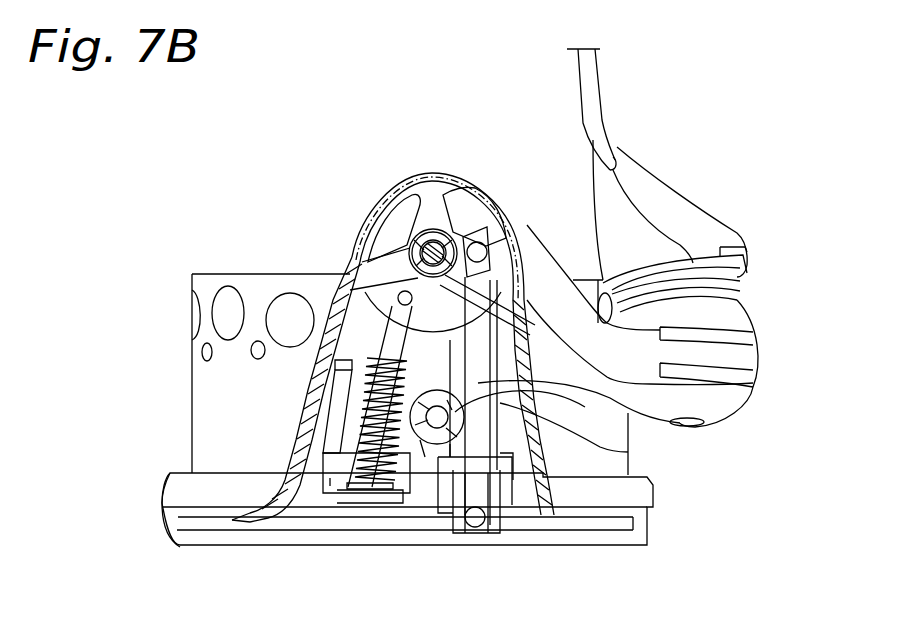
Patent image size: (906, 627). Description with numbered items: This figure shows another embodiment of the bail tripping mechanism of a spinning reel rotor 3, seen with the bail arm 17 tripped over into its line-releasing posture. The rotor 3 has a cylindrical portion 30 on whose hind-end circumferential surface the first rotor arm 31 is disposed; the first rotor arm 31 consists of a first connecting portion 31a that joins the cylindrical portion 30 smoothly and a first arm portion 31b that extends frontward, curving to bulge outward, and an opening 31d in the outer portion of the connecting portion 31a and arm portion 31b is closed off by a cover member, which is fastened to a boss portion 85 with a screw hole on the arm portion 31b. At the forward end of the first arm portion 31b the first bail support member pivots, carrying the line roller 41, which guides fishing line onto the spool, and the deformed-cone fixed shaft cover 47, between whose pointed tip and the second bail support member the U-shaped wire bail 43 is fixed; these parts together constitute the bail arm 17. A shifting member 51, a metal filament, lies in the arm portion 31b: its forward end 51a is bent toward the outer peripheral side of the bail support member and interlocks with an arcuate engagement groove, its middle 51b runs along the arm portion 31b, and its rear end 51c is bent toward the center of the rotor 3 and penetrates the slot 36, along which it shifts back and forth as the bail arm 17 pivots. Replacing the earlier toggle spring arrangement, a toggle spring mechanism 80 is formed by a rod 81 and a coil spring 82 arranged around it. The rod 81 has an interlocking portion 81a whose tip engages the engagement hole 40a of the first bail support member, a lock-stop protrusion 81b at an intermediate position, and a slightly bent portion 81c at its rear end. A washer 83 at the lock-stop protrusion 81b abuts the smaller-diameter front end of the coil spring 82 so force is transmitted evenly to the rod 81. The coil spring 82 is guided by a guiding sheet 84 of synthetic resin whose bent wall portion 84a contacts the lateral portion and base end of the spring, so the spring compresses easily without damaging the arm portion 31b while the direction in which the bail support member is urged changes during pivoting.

The rotor 3 is at (200, 262).
The cylindrical portion 30 is at (240, 282).
The first rotor arm 31 is at (268, 462).
The first connecting portion 31a is at (190, 493).
The first arm portion 31b is at (330, 478).
The opening 31d is at (313, 370).
The slot 36 is at (500, 513).
The engagement hole 40a is at (433, 240).
The line roller 41 is at (733, 289).
The bail 43 is at (592, 97).
The fixed shaft cover 47 is at (645, 190).
The bail arm 17 is at (713, 200).
The shifting member 51 is at (487, 330).
The forward end of the shifting member 51a is at (477, 242).
The middle of the shifting member 51b is at (752, 383).
The rear end of the shifting member 51c is at (485, 537).
The toggle spring mechanism 80 is at (356, 328).
The rod 81 is at (312, 482).
The interlocking portion 81a is at (363, 297).
The lock-stop protrusion 81b is at (372, 350).
The bent portion 81c is at (375, 478).
The coil spring 82 is at (440, 478).
The washer 83 is at (488, 228).
The guiding sheet 84 is at (437, 490).
The wall portion 84a is at (362, 405).
The boss portion 85 is at (628, 452).